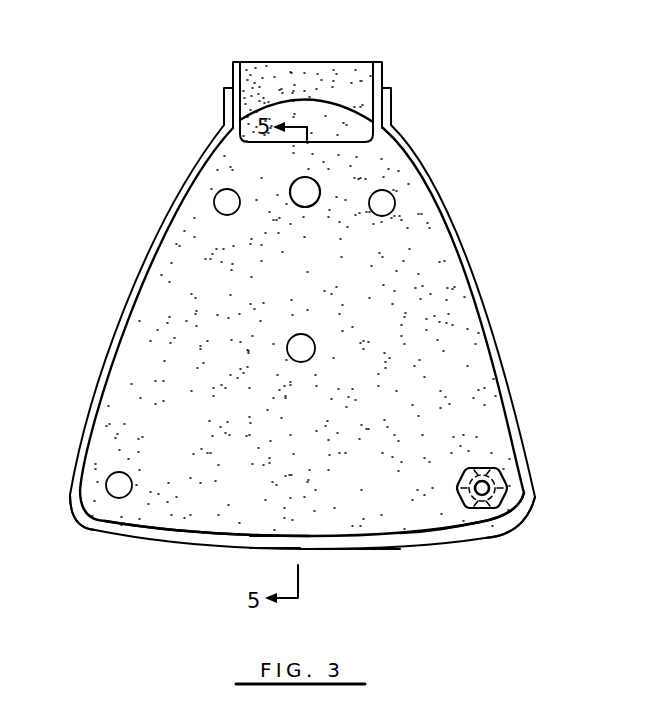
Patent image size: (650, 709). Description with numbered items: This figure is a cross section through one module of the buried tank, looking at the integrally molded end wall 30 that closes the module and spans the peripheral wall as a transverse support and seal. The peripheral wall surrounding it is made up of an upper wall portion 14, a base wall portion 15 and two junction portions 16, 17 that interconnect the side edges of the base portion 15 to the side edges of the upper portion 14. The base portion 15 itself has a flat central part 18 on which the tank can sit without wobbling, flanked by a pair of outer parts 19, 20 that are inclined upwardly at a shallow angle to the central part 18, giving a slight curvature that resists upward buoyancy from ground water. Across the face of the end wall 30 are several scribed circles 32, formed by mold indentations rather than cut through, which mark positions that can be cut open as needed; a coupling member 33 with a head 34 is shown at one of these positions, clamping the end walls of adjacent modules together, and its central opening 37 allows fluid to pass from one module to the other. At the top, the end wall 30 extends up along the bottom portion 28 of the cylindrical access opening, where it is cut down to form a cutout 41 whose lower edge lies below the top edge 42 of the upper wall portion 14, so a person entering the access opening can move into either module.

The upper wall portion 14 is at (483, 305).
The base wall portion 15 is at (334, 549).
The junction portion 16 is at (72, 520).
The junction portion 17 is at (518, 533).
The flat central part 18 is at (272, 542).
The outer part 19 is at (128, 535).
The outer part 20 is at (478, 530).
The bottom portion of cylindrical wall 28 is at (222, 99).
The end wall 30 is at (467, 372).
The scribed circles 32 is at (215, 207).
The coupling member 33 is at (493, 455).
The head 34 is at (522, 514).
The central opening 37 is at (489, 489).
The cutout 41 is at (366, 130).
The top edge 42 is at (300, 97).